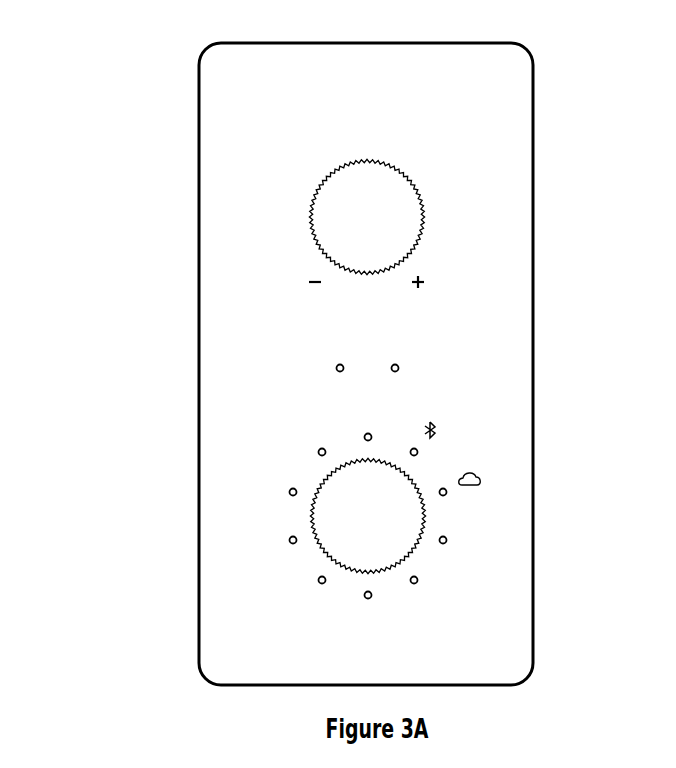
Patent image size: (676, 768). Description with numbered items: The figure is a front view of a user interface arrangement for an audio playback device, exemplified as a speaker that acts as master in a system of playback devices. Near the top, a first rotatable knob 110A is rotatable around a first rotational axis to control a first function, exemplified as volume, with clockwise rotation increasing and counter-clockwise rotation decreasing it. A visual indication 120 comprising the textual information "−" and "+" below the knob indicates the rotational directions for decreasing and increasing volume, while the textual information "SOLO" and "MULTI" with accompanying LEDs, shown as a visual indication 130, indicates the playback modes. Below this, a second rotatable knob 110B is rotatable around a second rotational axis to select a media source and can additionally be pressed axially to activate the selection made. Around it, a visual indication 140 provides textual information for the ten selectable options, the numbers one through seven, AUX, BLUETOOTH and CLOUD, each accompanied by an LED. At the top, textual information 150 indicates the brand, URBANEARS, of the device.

The first rotatable knob 110A is at (392, 199).
The second rotatable knob 110B is at (387, 507).
The visual indication 120 is at (296, 270).
The solo/multi mode indicator 130 is at (296, 355).
The visual indication 140 is at (281, 522).
The textual information 150 is at (283, 101).